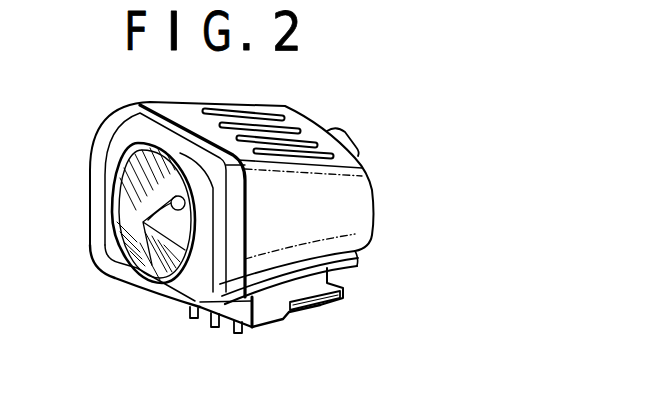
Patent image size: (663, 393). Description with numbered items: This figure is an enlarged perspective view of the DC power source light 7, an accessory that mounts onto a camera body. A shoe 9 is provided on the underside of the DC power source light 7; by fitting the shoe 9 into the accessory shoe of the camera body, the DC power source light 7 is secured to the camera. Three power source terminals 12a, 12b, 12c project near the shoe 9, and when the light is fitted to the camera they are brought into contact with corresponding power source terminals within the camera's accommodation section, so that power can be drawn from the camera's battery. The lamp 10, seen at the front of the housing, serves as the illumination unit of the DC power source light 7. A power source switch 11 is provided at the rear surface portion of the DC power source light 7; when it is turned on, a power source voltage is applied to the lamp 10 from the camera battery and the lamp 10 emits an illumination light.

The DC power source light 7 is at (363, 214).
The shoe 9 is at (313, 306).
The lamp 10 is at (143, 222).
The power source switch 11 is at (347, 138).
The power source terminal 12a is at (188, 313).
The power source terminal 12b is at (214, 327).
The power source terminal 12c is at (240, 333).